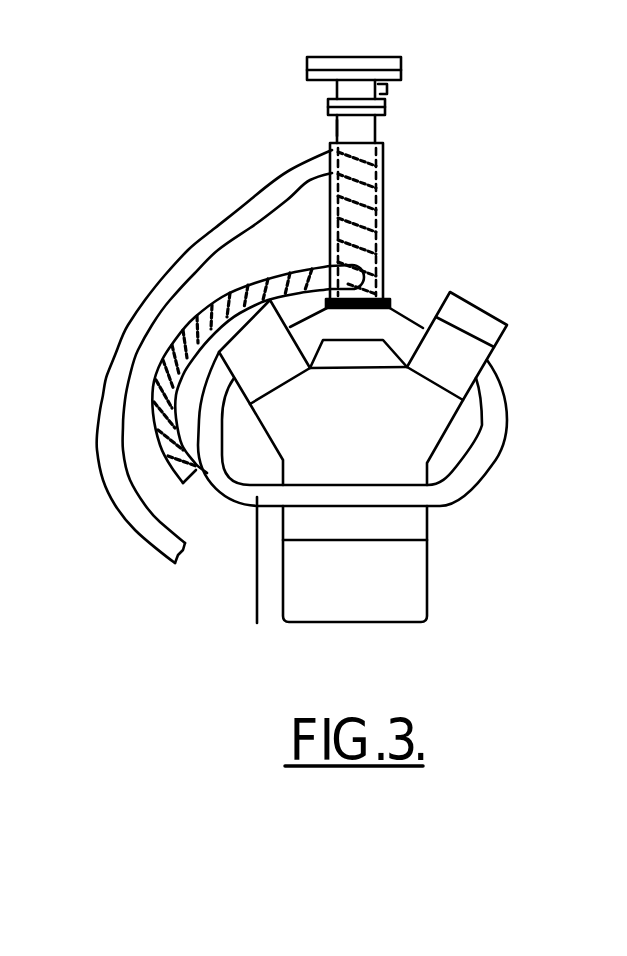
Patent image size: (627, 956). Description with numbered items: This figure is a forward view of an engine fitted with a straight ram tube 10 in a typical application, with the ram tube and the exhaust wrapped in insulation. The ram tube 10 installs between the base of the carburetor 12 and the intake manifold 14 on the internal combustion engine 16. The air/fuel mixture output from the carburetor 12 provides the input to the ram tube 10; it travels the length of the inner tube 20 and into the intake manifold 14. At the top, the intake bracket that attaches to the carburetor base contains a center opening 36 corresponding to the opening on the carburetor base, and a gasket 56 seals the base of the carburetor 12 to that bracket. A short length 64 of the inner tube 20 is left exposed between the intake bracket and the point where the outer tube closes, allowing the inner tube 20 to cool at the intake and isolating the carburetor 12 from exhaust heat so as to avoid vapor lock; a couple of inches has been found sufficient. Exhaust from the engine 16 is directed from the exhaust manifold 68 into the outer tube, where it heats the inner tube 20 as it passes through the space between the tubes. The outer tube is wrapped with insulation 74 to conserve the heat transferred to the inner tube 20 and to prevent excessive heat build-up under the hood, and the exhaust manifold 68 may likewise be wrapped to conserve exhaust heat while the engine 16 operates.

The ram tube 10 is at (480, 155).
The carburetor 12 is at (386, 103).
The intake manifold 14 is at (397, 325).
The internal combustion engine 16 is at (427, 520).
The inner tube 20 is at (377, 128).
The center opening 36 is at (355, 88).
The gasket 56 is at (330, 103).
The length 64 is at (326, 128).
The exhaust manifold 68 is at (255, 587).
The insulation 74 is at (383, 197).